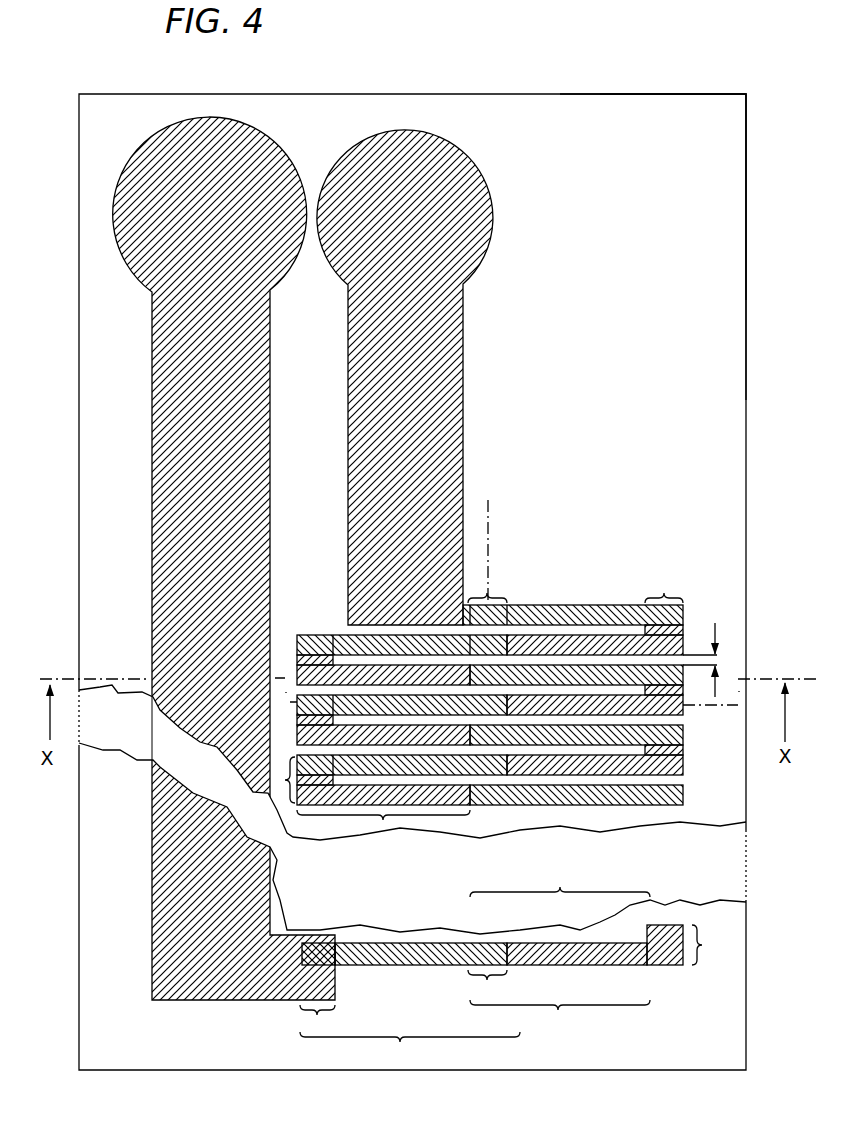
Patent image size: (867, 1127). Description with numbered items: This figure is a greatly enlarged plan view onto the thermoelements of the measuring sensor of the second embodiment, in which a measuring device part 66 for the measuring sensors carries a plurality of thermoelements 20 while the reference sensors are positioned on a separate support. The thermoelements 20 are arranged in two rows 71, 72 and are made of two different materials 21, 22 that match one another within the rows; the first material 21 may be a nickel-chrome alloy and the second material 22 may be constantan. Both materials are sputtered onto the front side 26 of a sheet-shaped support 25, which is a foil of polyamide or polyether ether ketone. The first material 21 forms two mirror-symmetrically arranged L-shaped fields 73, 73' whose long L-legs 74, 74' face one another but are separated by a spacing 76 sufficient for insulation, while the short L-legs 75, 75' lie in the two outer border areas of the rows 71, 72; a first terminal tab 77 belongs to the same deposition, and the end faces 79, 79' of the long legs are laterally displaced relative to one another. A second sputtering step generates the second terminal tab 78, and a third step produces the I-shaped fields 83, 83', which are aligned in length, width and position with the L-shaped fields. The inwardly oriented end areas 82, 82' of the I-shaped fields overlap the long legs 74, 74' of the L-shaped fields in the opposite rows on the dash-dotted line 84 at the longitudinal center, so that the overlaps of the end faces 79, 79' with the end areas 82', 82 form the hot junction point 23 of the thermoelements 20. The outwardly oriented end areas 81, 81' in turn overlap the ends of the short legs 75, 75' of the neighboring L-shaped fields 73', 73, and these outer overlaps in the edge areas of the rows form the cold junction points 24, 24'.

The sheet-shaped support 25 is at (549, 92).
The front side 26 is at (705, 112).
The measuring device part 66 is at (604, 262).
The second terminal tab 78 is at (185, 440).
The first terminal tab 77 is at (430, 415).
The line 84 is at (492, 512).
The inwardly oriented end area 82 is at (487, 586).
The hot junction point 23 is at (533, 604).
The I-shaped field 83 is at (573, 598).
The outwardly oriented end area 81 is at (664, 586).
The L-shaped field 73 is at (685, 755).
The L-shaped field 73' is at (308, 686).
The spacing 76 is at (718, 658).
The cold junction point 24' is at (320, 800).
The cold junction point 24 is at (621, 705).
The short L-leg 75' is at (239, 780).
The thermoelement 20 is at (686, 771).
The long L-leg 74' is at (383, 830).
The first material 21 is at (434, 806).
The end face 79' is at (576, 798).
The second material 22 is at (595, 806).
The I-shaped field 83' is at (421, 927).
The end face 79 is at (511, 971).
The long L-leg 74 is at (560, 881).
The row 71 is at (560, 1018).
The row 72 is at (410, 1051).
The outwardly oriented end area 81' is at (317, 1022).
The inwardly oriented end area 82' is at (487, 987).
The short L-leg 75 is at (711, 945).